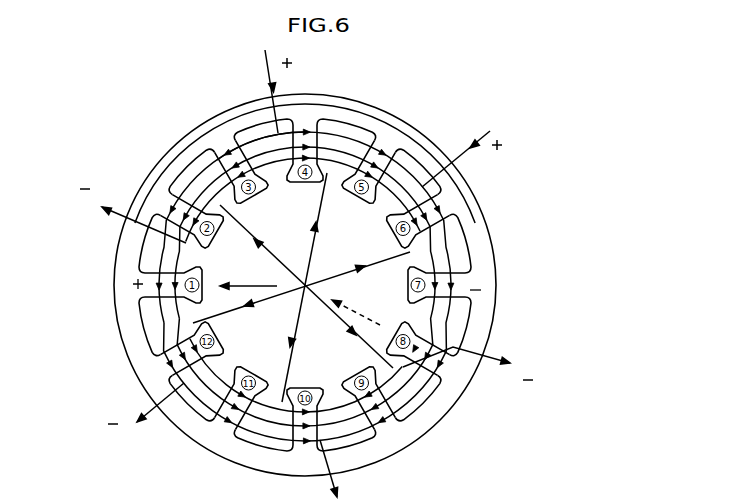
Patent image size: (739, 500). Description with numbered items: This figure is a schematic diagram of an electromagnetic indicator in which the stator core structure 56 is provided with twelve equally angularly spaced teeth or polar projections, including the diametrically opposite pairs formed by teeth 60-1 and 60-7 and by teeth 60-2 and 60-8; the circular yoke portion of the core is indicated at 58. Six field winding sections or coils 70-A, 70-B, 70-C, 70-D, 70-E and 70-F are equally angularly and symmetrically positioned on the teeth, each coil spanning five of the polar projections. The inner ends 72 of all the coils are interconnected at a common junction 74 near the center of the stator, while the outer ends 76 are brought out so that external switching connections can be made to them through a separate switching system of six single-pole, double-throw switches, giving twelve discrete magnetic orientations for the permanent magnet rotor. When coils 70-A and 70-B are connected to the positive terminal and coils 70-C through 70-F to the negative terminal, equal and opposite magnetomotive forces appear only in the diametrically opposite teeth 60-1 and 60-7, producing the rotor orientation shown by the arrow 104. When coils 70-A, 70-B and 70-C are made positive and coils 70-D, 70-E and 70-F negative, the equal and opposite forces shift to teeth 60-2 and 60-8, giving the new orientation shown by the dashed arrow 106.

The stator core structure 56 is at (433, 117).
The yoke ring 58 is at (465, 201).
The tooth or polar projection 60-1 is at (152, 278).
The tooth or polar projection 60-2 is at (162, 183).
The tooth or polar projection 60-7 is at (470, 277).
The tooth or polar projection 60-8 is at (443, 370).
The field winding section or coil 70-A is at (346, 132).
The field winding section or coil 70-B is at (452, 262).
The field winding section or coil 70-C is at (412, 398).
The field winding section or coil 70-D is at (270, 432).
The field winding section or coil 70-E is at (183, 327).
The field winding section or coil 70-F is at (222, 168).
The inner ends 72 is at (390, 262).
The interconnection of inner ends 74 is at (317, 273).
The outer ends 76 is at (276, 93).
The arrow 104 is at (247, 286).
The dashed arrow 106 is at (357, 312).